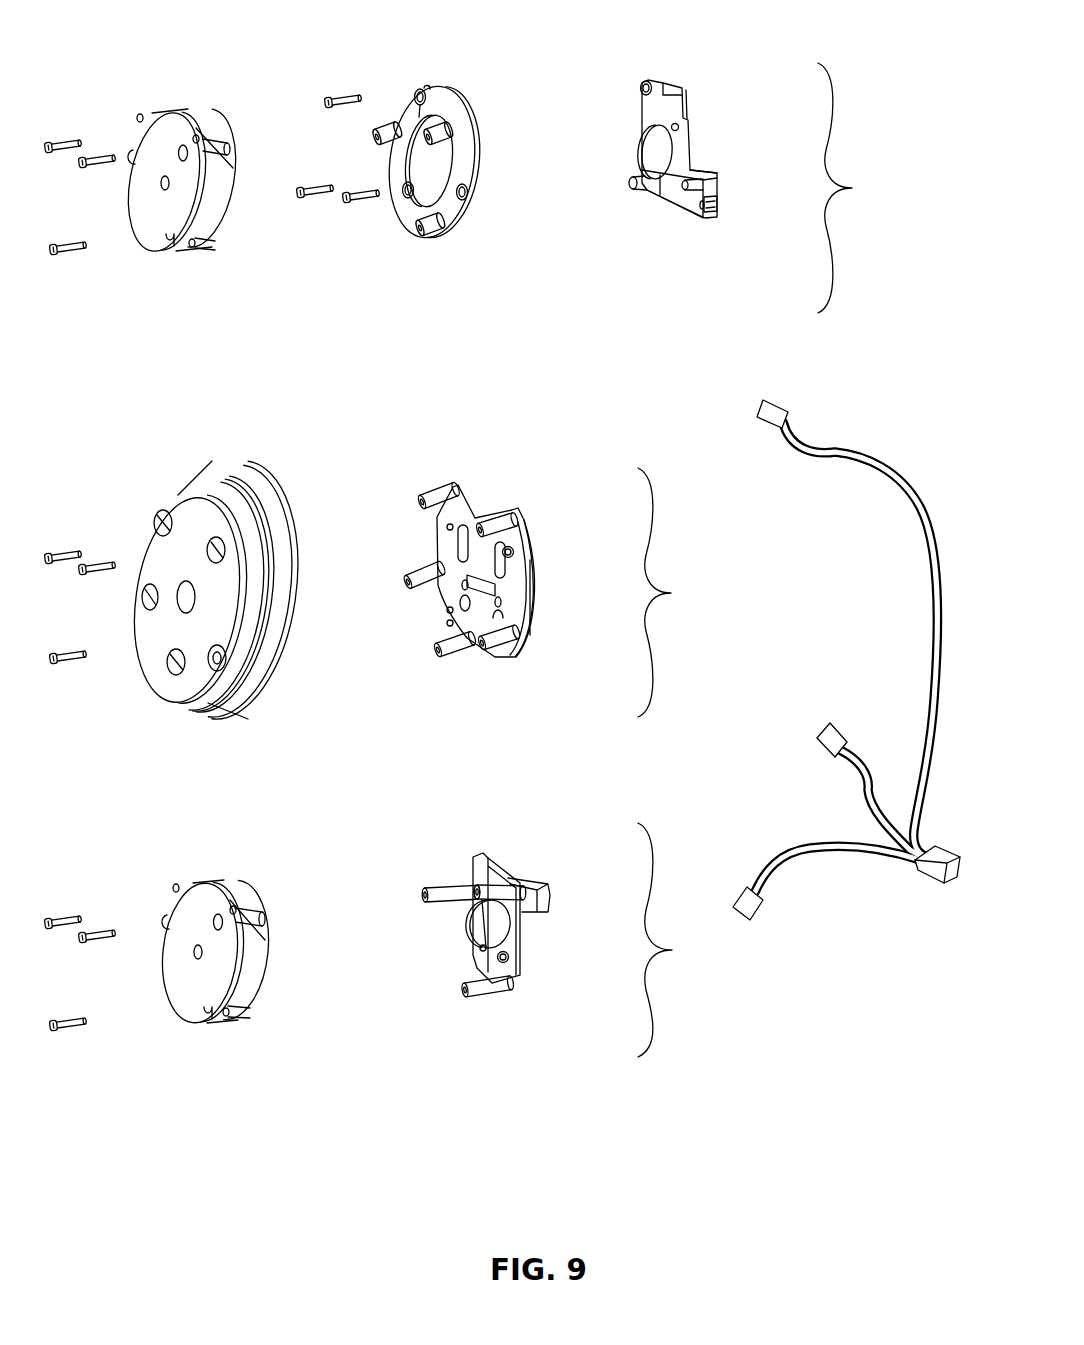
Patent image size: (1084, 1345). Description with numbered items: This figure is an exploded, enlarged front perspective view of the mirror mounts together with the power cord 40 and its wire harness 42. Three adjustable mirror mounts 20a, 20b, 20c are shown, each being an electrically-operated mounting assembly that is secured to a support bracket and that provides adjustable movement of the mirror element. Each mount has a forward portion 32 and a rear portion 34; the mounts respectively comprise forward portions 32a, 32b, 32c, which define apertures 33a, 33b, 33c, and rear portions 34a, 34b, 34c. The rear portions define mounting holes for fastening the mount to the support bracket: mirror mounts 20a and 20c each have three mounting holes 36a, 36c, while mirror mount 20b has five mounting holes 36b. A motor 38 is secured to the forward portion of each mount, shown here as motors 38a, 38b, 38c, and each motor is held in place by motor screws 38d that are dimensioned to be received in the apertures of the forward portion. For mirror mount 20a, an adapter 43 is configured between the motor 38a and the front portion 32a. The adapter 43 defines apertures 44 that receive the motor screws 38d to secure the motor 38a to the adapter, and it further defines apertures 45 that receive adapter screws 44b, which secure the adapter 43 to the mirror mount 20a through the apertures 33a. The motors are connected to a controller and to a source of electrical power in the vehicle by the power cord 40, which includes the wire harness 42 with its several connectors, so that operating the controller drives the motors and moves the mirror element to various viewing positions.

The motor 38 is at (177, 68).
The motor 38a is at (173, 228).
The motor 38b is at (283, 640).
The motor 38c is at (224, 1016).
The motor screws 38d is at (80, 247).
The adapter 43 is at (450, 208).
The apertures 44 is at (415, 231).
The adapter screws 44b is at (355, 200).
The apertures 45 is at (437, 88).
The mirror mount 20a is at (864, 188).
The mirror mount 20b is at (684, 592).
The mirror mount 20c is at (682, 940).
The forward portion 32 is at (425, 1060).
The forward portion 32a is at (680, 206).
The forward portion 32b is at (528, 631).
The forward portion 32c is at (473, 878).
The apertures 33a is at (641, 85).
The apertures 33b is at (437, 650).
The apertures 33c is at (464, 988).
The rear portion 34 is at (577, 1060).
The rear portion 34a is at (692, 118).
The rear portion 34b is at (528, 533).
The rear portion 34c is at (510, 882).
The mounting holes 36a is at (707, 201).
The mounting holes 36b is at (512, 553).
The mounting holes 36c is at (508, 957).
The power cord 40 is at (895, 480).
The wire harness 42 is at (923, 870).